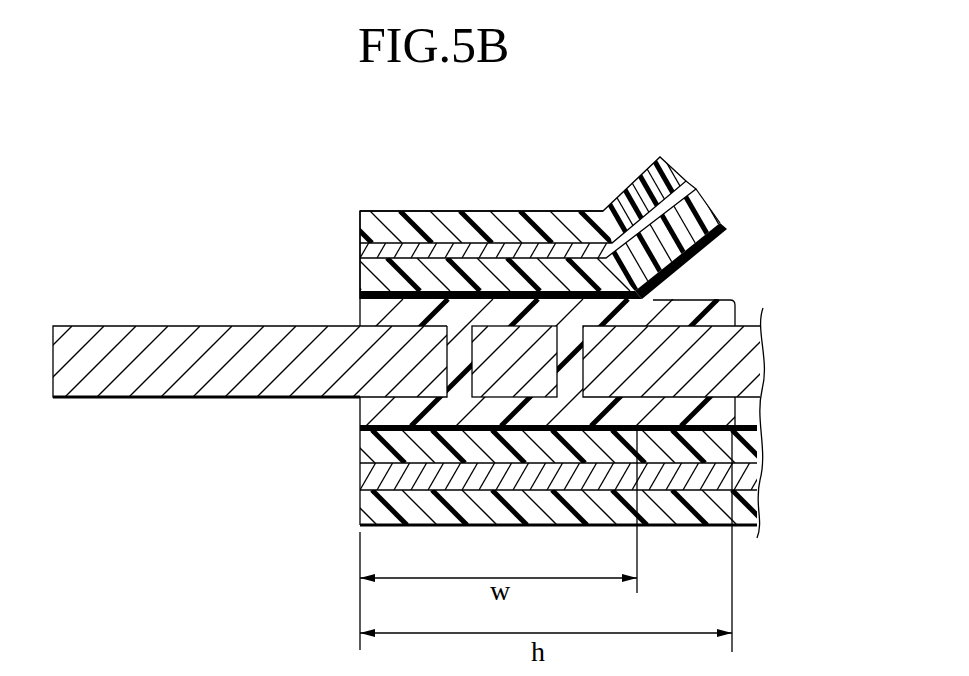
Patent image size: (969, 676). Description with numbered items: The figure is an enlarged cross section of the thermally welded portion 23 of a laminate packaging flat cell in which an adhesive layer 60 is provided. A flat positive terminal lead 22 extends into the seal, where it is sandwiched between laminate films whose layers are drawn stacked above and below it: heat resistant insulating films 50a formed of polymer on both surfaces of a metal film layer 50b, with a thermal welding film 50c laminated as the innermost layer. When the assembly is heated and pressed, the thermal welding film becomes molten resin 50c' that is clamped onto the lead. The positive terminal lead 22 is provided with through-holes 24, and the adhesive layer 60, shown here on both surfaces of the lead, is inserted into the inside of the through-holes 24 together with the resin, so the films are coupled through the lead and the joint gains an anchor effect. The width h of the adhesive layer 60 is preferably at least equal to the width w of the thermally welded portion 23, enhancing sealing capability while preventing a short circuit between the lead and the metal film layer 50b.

The positive terminal lead 22 is at (139, 326).
The thermally welded portion 23 is at (595, 203).
The through-holes 24 is at (577, 367).
The heat resistant insulating film 50a is at (660, 157).
The metal film layer 50b is at (688, 179).
The thermal welding film 50c is at (715, 261).
The molten resin 50c' is at (456, 276).
The adhesive layer 60 is at (372, 311).